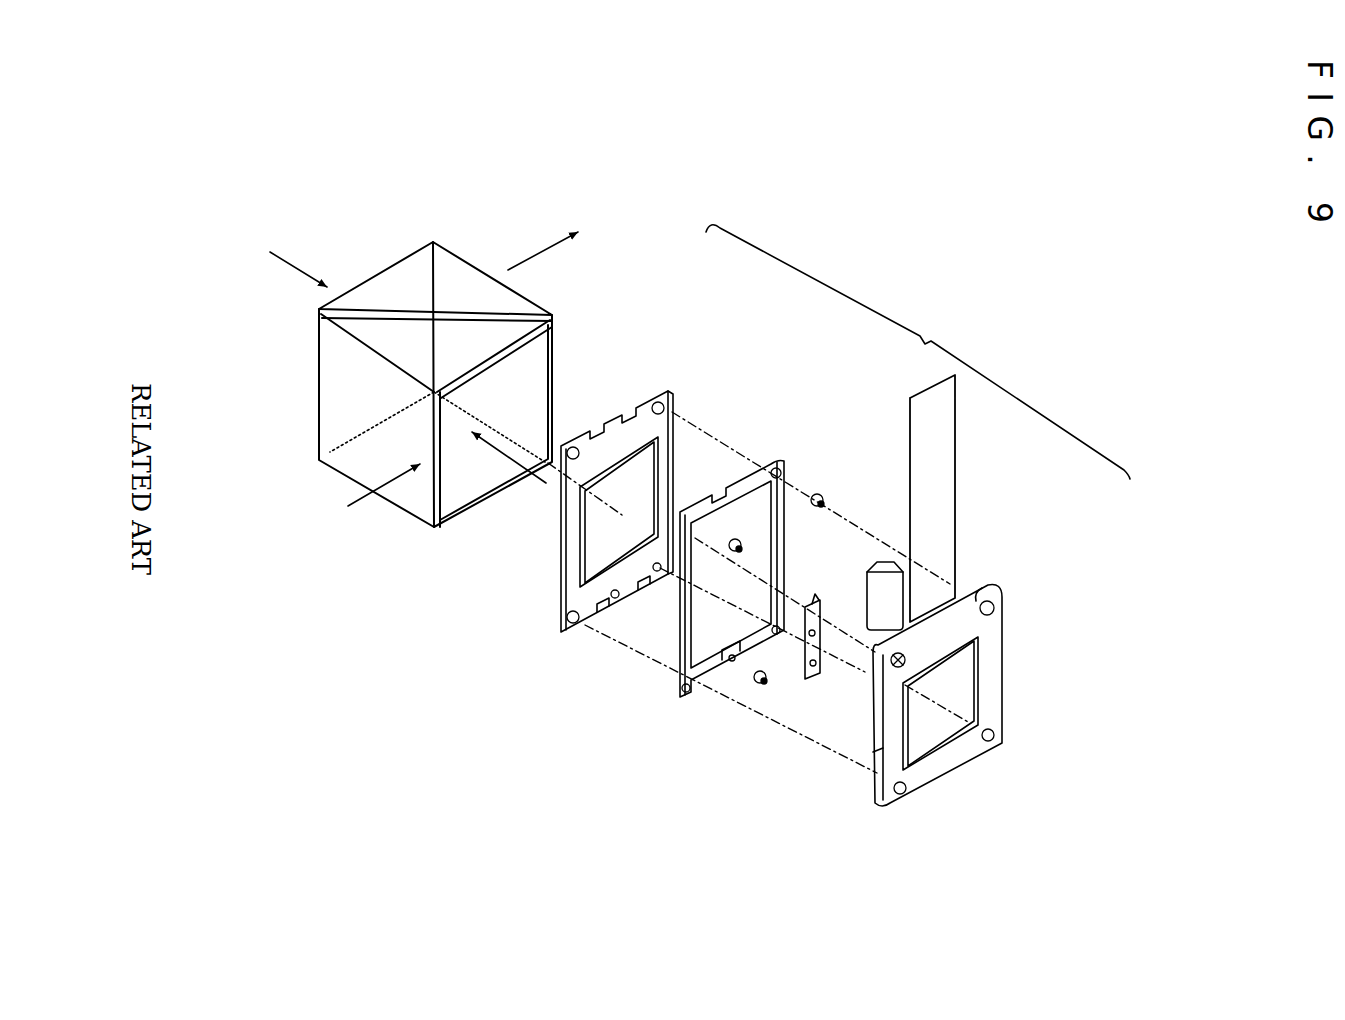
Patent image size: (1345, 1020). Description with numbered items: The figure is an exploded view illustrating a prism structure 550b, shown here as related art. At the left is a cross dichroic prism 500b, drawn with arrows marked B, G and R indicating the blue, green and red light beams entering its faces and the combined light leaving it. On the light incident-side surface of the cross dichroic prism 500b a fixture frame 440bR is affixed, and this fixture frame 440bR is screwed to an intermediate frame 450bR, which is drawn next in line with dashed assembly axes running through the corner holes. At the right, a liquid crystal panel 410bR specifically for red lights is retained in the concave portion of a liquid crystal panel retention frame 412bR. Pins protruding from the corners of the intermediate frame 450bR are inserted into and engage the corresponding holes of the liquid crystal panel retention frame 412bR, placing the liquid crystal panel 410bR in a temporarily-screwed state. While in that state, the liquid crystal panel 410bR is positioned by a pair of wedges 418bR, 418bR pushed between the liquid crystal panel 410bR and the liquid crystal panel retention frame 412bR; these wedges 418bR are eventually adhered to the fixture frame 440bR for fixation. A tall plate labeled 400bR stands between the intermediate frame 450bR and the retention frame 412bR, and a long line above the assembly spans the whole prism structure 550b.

The prism structure 550b is at (1097, 211).
The cross dichroic prism 500b is at (326, 474).
The blue light B is at (288, 262).
The green light G is at (372, 495).
The red light R is at (509, 472).
The fixture frame 440bR is at (674, 390).
The intermediate frame 450bR is at (788, 466).
The fixing plate 400bR is at (946, 468).
The wedge 418bR is at (885, 553).
The liquid crystal panel retention frame 412bR is at (1008, 612).
The liquid crystal panel 410bR is at (953, 677).